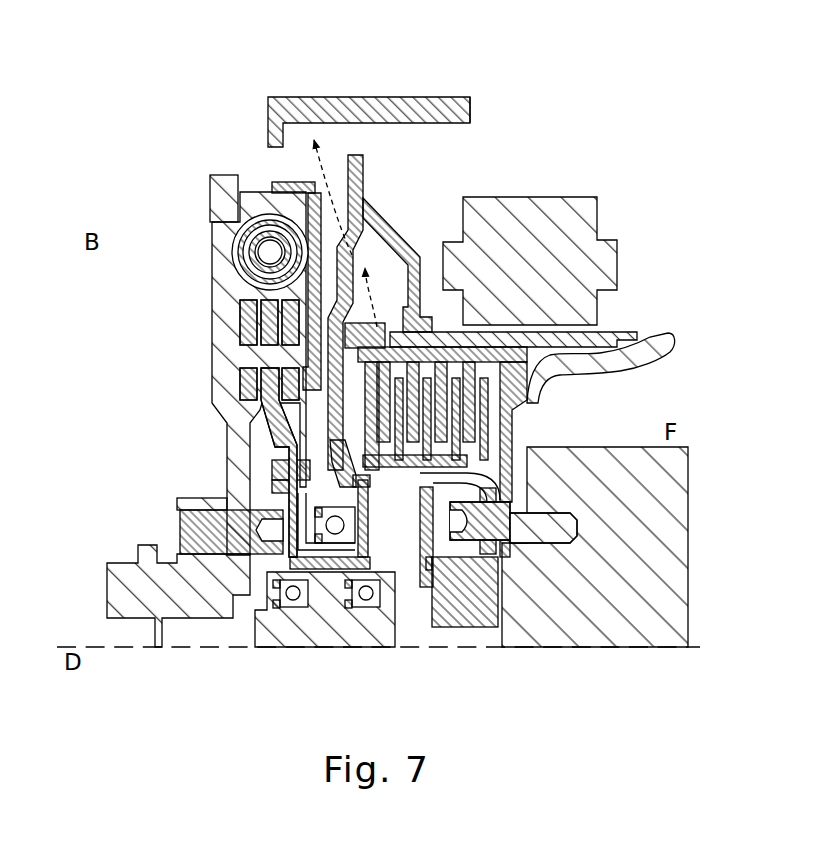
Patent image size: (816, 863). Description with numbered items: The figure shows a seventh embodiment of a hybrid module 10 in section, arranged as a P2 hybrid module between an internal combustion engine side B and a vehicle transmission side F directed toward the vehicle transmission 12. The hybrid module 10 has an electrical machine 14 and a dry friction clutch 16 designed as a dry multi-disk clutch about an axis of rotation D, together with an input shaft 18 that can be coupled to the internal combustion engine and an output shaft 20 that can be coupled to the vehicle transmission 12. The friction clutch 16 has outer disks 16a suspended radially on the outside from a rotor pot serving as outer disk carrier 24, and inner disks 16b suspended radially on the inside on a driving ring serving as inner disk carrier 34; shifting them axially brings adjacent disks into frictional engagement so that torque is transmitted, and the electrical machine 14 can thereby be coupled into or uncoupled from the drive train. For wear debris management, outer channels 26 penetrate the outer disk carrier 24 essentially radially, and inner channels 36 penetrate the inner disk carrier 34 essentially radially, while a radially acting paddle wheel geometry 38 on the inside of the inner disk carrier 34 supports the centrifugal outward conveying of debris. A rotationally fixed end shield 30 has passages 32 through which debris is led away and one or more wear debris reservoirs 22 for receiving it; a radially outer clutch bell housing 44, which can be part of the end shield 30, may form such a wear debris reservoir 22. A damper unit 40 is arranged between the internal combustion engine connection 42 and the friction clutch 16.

The hybrid module 10 is at (213, 127).
The vehicle transmission 12 is at (654, 631).
The electrical machine 14 is at (508, 198).
The dry friction clutch 16 is at (454, 423).
The outer disks 16a is at (527, 402).
The inner disks 16b is at (245, 348).
The input shaft 18 is at (277, 633).
The output shaft 20 is at (424, 616).
The wear debris reservoir 22 is at (322, 97).
The outer disk carrier 24 is at (514, 400).
The outer channels 26 is at (427, 330).
The end shield 30 is at (318, 293).
The passages 32 is at (363, 204).
The inner disk carrier 34 is at (333, 506).
The inner channels 36 is at (405, 450).
The paddle wheel geometry 38 is at (290, 440).
The damper unit 40 is at (209, 239).
The internal combustion engine connection 42 is at (187, 510).
The clutch bell housing 44 is at (437, 97).